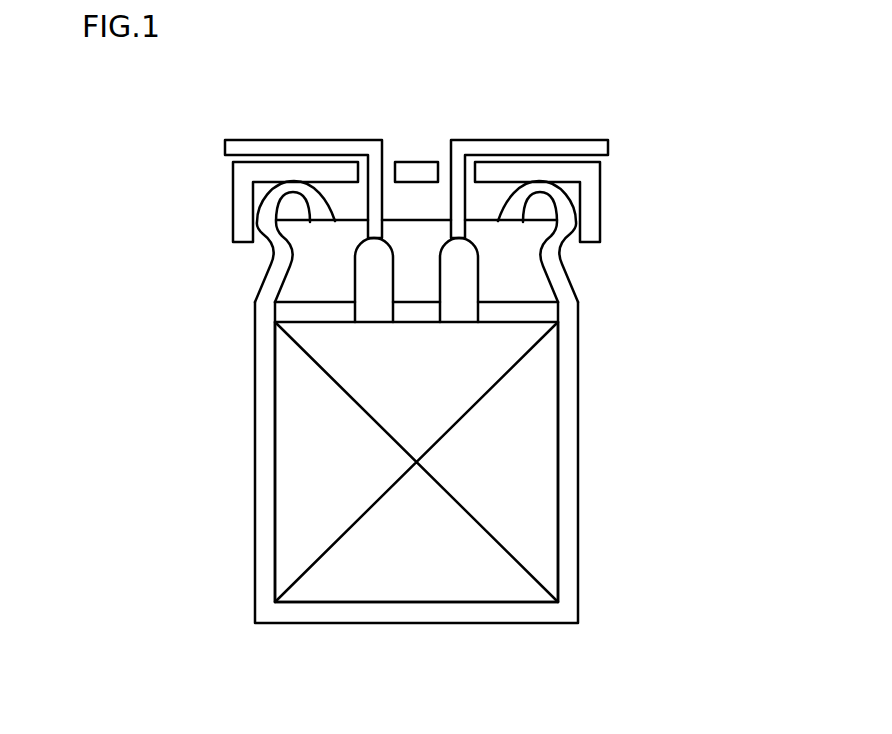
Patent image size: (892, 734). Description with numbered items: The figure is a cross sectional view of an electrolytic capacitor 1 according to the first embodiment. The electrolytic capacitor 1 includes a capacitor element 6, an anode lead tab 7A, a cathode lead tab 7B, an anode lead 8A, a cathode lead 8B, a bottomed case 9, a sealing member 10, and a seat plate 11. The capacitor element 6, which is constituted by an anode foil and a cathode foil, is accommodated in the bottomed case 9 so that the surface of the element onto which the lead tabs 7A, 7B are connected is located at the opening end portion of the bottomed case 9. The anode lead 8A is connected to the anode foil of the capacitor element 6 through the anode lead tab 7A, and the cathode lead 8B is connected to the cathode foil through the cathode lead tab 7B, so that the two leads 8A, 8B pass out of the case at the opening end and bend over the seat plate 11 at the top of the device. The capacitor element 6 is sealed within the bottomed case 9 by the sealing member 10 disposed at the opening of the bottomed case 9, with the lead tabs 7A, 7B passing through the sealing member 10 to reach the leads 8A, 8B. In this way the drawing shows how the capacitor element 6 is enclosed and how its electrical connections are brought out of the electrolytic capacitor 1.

The electrolytic capacitor 1 is at (422, 57).
The capacitor element 6 is at (315, 440).
The anode lead tab 7A is at (375, 283).
The cathode lead tab 7B is at (470, 287).
The anode lead 8A is at (302, 147).
The cathode lead 8B is at (538, 148).
The bottomed case 9 is at (572, 408).
The sealing member 10 is at (512, 267).
The seat plate 11 is at (243, 187).